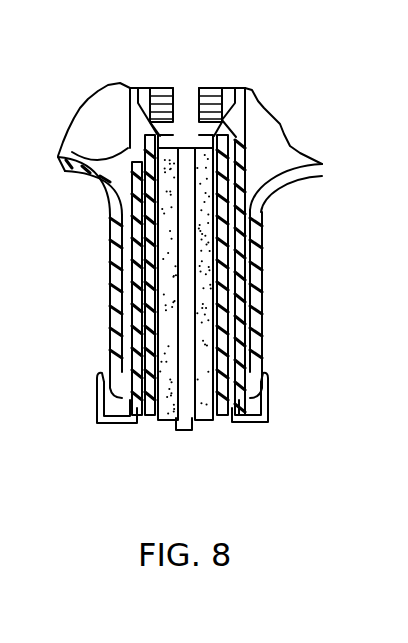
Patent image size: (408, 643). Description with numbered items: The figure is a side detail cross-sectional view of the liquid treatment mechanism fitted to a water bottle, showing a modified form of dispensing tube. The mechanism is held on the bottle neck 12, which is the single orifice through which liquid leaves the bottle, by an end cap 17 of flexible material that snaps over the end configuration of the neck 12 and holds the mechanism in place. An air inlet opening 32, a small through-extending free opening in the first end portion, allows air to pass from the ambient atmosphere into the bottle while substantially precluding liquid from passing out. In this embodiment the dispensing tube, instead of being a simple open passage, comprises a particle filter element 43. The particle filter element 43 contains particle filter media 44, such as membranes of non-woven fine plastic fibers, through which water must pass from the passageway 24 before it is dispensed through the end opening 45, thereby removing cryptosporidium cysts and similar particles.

The neck 12 is at (262, 242).
The end cap 17 is at (97, 382).
The passageway 24 is at (184, 118).
The air inlet opening 32 is at (108, 174).
The particle filter element 43 is at (222, 428).
The particle filter media 44 is at (156, 306).
The end opening 45 is at (183, 430).